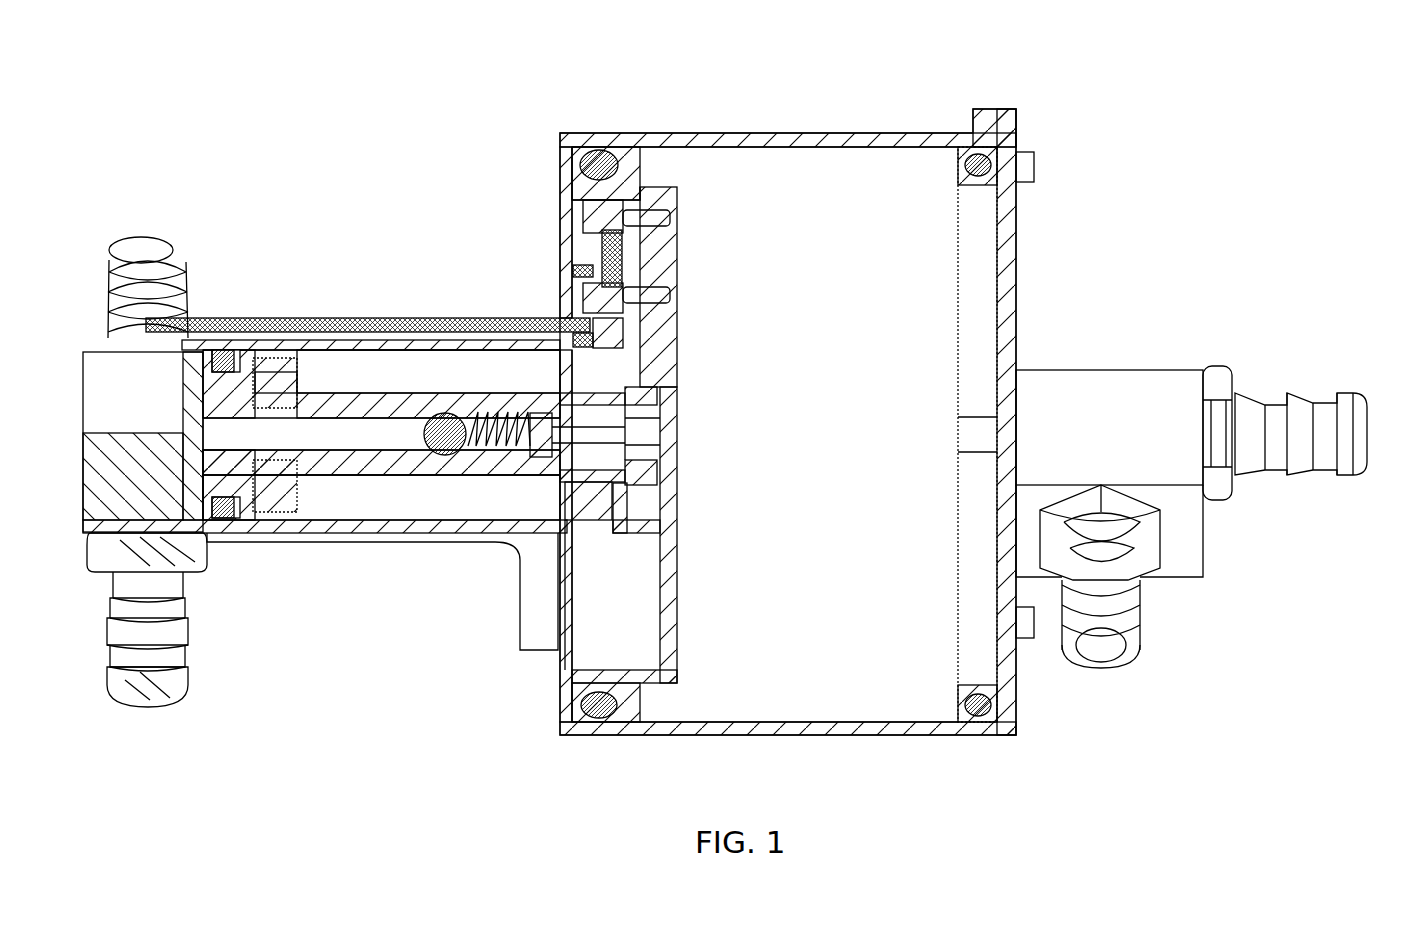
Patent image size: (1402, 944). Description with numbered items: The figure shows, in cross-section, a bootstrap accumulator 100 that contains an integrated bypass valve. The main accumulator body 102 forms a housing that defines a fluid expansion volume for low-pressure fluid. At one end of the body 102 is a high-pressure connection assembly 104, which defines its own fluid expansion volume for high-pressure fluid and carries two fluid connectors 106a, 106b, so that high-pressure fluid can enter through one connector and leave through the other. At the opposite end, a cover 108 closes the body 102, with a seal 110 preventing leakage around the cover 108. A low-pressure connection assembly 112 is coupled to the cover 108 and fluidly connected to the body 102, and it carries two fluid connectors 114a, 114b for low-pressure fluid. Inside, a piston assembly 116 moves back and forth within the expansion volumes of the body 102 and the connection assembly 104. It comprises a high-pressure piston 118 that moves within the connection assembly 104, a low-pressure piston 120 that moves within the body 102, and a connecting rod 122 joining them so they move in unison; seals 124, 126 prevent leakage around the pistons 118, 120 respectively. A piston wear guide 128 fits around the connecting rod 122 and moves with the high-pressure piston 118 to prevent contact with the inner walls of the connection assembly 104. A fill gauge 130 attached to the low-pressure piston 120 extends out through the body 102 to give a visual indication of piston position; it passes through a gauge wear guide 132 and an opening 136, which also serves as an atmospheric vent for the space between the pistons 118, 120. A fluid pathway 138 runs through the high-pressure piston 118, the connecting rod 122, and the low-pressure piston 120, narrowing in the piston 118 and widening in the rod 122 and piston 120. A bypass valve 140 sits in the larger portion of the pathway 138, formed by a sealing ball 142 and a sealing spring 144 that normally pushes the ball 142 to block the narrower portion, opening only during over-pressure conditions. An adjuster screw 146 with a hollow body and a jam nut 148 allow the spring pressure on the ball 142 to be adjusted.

The bootstrap accumulator 100 is at (284, 110).
The main accumulator body 102 is at (720, 132).
The high-pressure connection assembly 104 is at (398, 567).
The fluid connector 106a is at (170, 238).
The fluid connector 106b is at (183, 698).
The cover 108 is at (1018, 238).
The seal 110 is at (980, 146).
The low-pressure connection assembly 112 is at (1163, 345).
The fluid connector 114a is at (1289, 481).
The fluid connector 114b is at (1114, 661).
The piston assembly 116 is at (710, 603).
The high-pressure piston 118 is at (231, 396).
The low-pressure piston 120 is at (666, 660).
The connecting rod 122 is at (325, 476).
The seal 124 is at (225, 342).
The seal 126 is at (589, 716).
The piston wear guide 128 is at (283, 382).
The fill gauge 130 is at (209, 315).
The gauge wear guide 132 is at (572, 266).
The opening 136 is at (556, 311).
The fluid pathway 138 is at (380, 430).
The bypass valve 140 is at (482, 392).
The sealing ball 142 is at (448, 458).
The sealing spring 144 is at (476, 450).
The adjuster screw 146 is at (658, 443).
The jam nut 148 is at (657, 393).